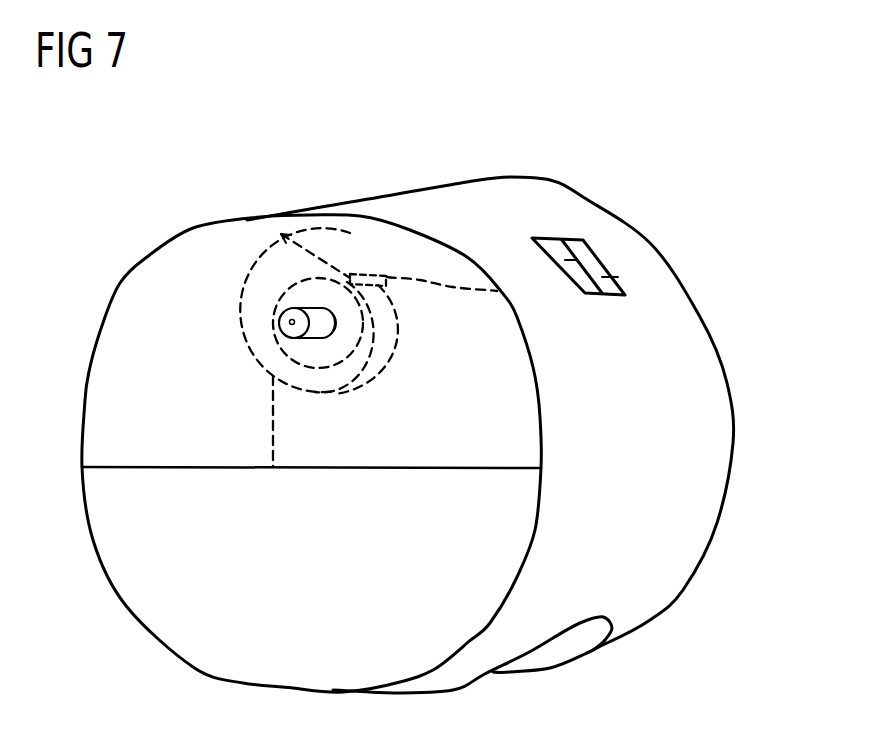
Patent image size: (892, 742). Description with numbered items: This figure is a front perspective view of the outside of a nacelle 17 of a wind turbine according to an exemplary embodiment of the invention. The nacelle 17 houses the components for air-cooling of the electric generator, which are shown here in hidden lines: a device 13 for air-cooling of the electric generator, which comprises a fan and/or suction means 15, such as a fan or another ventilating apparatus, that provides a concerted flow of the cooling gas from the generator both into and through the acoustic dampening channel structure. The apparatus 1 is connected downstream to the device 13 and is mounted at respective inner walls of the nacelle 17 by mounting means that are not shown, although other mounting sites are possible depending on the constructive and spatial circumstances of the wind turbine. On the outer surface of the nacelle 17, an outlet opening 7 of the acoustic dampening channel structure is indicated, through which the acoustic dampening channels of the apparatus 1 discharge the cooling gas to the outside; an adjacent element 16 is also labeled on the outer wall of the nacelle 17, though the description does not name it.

The apparatus 1 is at (374, 250).
The outlet opening 7 is at (565, 260).
The device for air-cooling 13 is at (240, 347).
The fan and/or suction means 15 is at (285, 305).
The panel 16 is at (572, 240).
The nacelle 17 is at (697, 383).